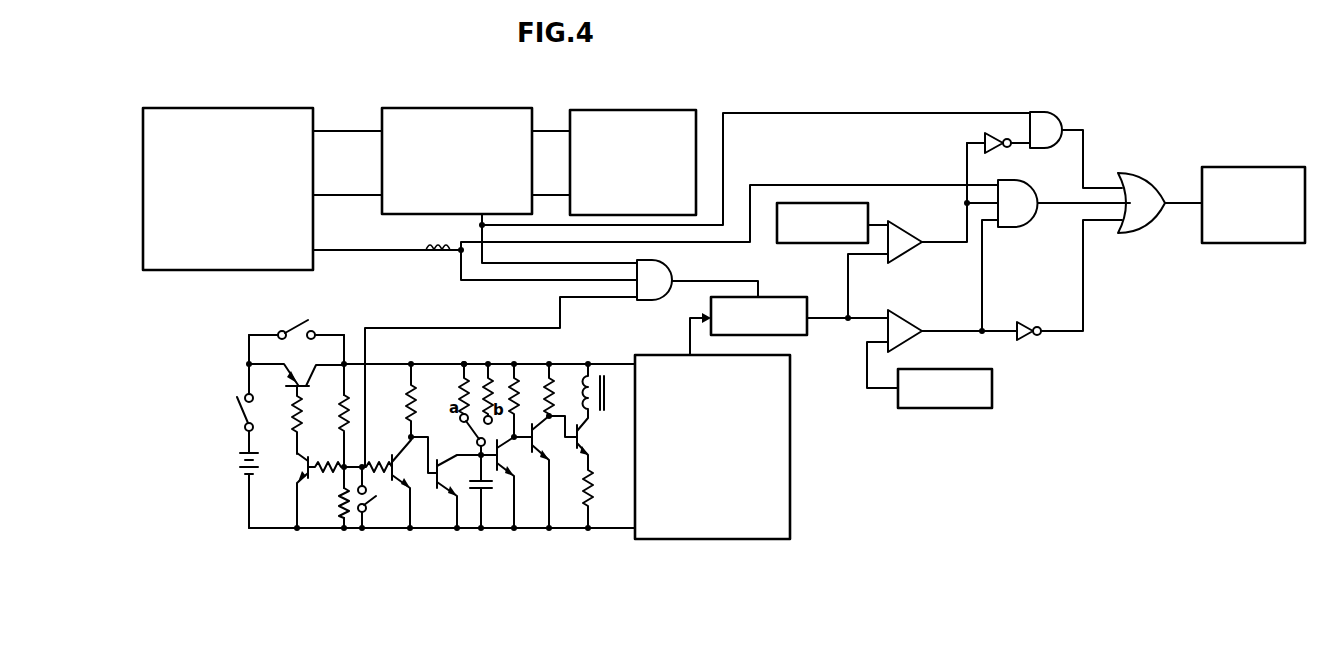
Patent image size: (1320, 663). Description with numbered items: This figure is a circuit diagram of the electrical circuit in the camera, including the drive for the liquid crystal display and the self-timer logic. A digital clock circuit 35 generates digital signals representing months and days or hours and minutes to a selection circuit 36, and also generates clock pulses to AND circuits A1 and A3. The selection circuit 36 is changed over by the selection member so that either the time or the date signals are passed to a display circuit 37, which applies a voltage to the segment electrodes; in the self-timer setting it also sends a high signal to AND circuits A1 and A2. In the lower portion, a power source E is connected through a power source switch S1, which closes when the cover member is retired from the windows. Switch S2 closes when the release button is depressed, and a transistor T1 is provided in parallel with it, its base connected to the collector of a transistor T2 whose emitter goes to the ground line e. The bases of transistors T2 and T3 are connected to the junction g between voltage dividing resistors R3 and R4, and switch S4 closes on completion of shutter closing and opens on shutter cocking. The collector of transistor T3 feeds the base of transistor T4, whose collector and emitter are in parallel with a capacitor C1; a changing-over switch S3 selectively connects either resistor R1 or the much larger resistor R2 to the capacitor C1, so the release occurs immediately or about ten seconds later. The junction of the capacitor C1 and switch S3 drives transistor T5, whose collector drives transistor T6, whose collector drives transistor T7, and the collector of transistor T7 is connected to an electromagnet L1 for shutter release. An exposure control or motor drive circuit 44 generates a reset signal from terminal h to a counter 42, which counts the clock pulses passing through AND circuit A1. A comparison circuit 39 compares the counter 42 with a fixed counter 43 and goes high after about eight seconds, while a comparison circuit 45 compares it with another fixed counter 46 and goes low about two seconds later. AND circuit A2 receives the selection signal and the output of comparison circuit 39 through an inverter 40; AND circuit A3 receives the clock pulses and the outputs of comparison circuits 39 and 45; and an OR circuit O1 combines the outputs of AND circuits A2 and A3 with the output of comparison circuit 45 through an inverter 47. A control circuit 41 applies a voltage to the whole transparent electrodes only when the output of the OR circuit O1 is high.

The digital clock circuit 35 is at (237, 118).
The selection circuit 36 is at (452, 115).
The display circuit 37 is at (628, 120).
The comparison circuit 39 is at (904, 245).
The inverter 40 is at (983, 139).
The control circuit 41 is at (1224, 244).
The counter 42 is at (809, 291).
The fixed counter 43 is at (866, 207).
The exposure control circuit or motor drive circuit 44 is at (686, 544).
The comparison circuit 45 is at (900, 321).
The fixed counter 46 is at (985, 370).
The inverter 47 is at (1025, 325).
The AND circuit A1 is at (663, 262).
The AND circuit A2 is at (1052, 113).
The AND circuit A3 is at (1033, 218).
The OR circuit O1 is at (1166, 196).
The power source switch S1 is at (236, 408).
The switch S2 is at (296, 322).
The changing-over switch S3 is at (474, 428).
The switch S4 is at (379, 497).
The transistor T1 is at (296, 409).
The transistor T2 is at (302, 462).
The transistor T3 is at (407, 447).
The transistor T4 is at (450, 492).
The transistor T5 is at (505, 455).
The transistor T6 is at (543, 444).
The transistor T7 is at (585, 419).
The resistor R1 is at (461, 392).
The resistor R2 is at (487, 396).
The voltage dividing resistor R3 is at (343, 416).
The voltage dividing resistor R4 is at (343, 497).
The capacitor C1 is at (487, 489).
The electromagnet L1 is at (607, 387).
The battery E is at (232, 467).
The junction g is at (364, 466).
The terminal h is at (688, 338).
The ground line e is at (432, 530).